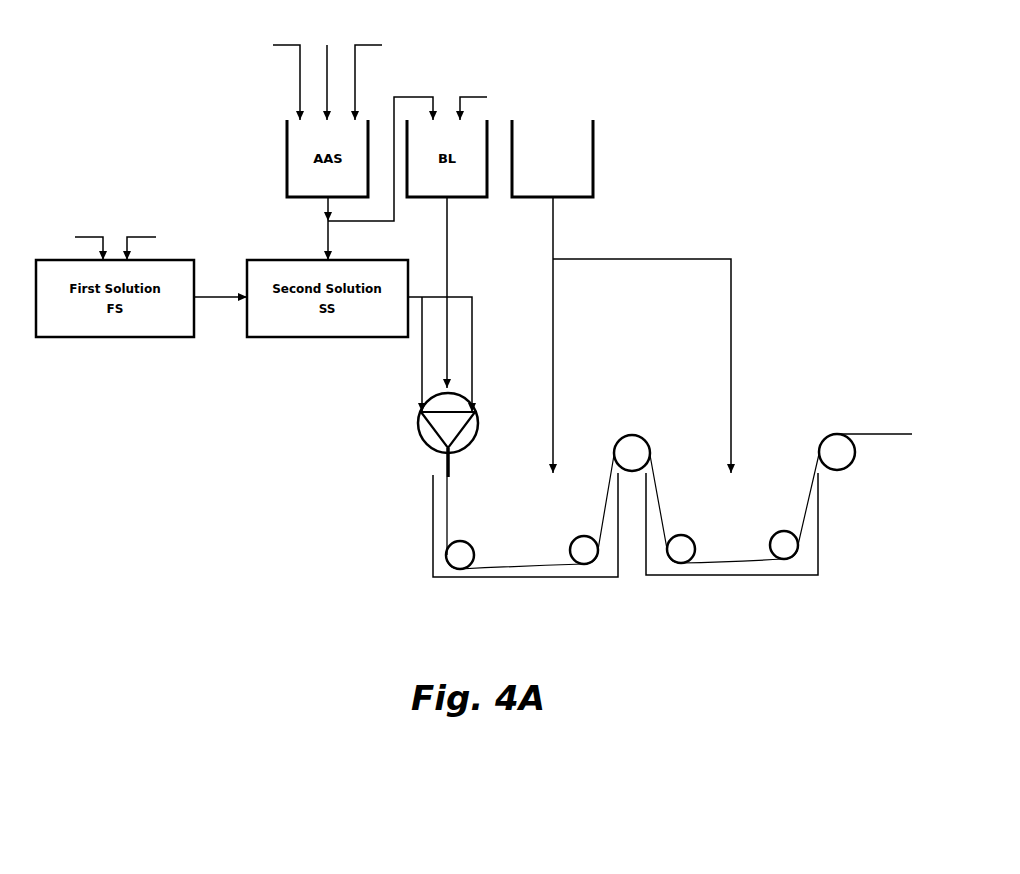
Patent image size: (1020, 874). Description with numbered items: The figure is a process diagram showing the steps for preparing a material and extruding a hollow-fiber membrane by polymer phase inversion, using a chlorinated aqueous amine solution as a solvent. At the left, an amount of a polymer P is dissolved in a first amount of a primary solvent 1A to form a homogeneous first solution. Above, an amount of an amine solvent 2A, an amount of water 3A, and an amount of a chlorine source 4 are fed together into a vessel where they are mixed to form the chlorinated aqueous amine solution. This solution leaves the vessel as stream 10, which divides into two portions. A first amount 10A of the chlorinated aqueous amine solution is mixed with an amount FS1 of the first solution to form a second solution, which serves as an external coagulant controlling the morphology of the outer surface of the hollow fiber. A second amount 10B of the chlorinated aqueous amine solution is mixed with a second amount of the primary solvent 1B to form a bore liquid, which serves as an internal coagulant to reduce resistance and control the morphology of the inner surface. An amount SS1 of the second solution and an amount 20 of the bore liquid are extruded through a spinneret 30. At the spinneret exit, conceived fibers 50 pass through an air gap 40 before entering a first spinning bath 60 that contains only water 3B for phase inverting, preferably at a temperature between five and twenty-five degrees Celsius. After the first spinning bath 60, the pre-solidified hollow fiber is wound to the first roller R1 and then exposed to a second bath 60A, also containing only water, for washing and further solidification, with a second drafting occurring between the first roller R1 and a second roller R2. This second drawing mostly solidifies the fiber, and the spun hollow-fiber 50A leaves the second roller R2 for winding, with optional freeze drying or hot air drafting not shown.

The amine solvent 2A is at (285, 72).
The chlorine source 4 is at (326, 72).
The water 3A is at (368, 72).
The second amount of the chlorinated aqueous amine solution 10B is at (380, 148).
The second amount of the primary solvent 1B is at (473, 98).
The chlorinated aqueous amine solution stream 10 is at (314, 210).
The first amount of the chlorinated aqueous amine solution 10A is at (345, 240).
The amount of the bore liquid 20 is at (461, 292).
The water 3B is at (621, 296).
The polymer P is at (89, 238).
The first amount of a primary solvent 1A is at (141, 238).
The amount of the first solution FS1 is at (220, 308).
The amount of the second solution SS1 is at (447, 354).
The spinneret 30 is at (448, 423).
The air gap 40 is at (459, 462).
The conceived fibers 50 is at (458, 516).
The first spinning bath 60 is at (525, 516).
The second bath 60A is at (732, 514).
The first roller R1 is at (632, 453).
The second roller R2 is at (837, 452).
The spun hollow-fiber 50A is at (874, 425).